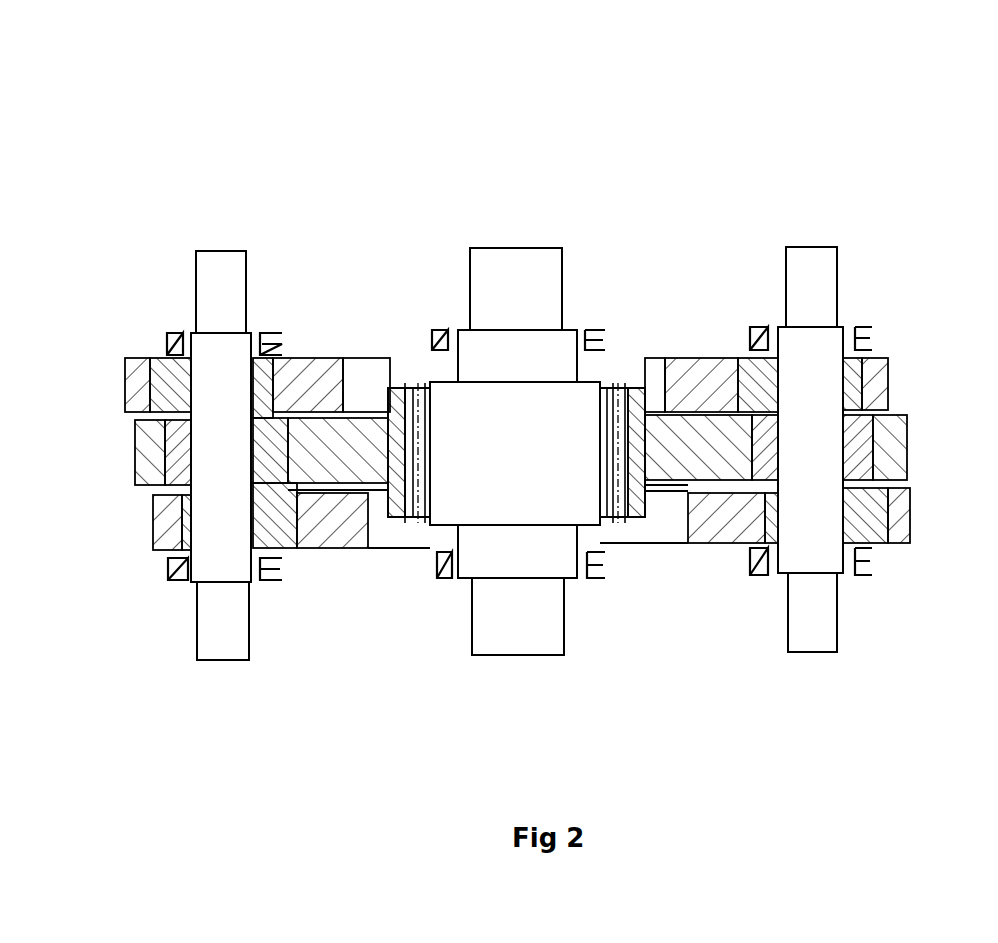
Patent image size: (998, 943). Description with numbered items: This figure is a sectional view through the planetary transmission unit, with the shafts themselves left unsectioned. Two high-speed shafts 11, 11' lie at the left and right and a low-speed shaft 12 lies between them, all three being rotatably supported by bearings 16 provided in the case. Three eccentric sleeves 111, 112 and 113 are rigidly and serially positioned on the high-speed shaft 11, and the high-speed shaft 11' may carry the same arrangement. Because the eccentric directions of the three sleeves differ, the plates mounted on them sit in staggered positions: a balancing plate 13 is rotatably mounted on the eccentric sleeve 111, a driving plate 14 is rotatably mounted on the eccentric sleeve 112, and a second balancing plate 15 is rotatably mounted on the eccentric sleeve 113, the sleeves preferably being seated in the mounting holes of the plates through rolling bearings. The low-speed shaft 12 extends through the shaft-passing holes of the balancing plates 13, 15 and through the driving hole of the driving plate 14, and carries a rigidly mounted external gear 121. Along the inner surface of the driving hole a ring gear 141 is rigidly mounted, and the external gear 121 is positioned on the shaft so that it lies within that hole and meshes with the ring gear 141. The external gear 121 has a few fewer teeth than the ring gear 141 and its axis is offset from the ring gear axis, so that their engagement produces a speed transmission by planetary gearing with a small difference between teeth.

The high-speed shaft 11 is at (241, 502).
The high-speed shaft 11' is at (834, 345).
The eccentric sleeve 111 is at (178, 80).
The eccentric sleeve 112 is at (60, 81).
The eccentric sleeve 113 is at (115, 755).
The low-speed shaft 12 is at (602, 752).
The external gear 121 is at (657, 73).
The balancing plate 13 is at (968, 71).
The driving plate 14 is at (838, 745).
The ring gear 141 is at (733, 748).
The balancing plate 15 is at (970, 743).
The bearing 16 is at (490, 752).